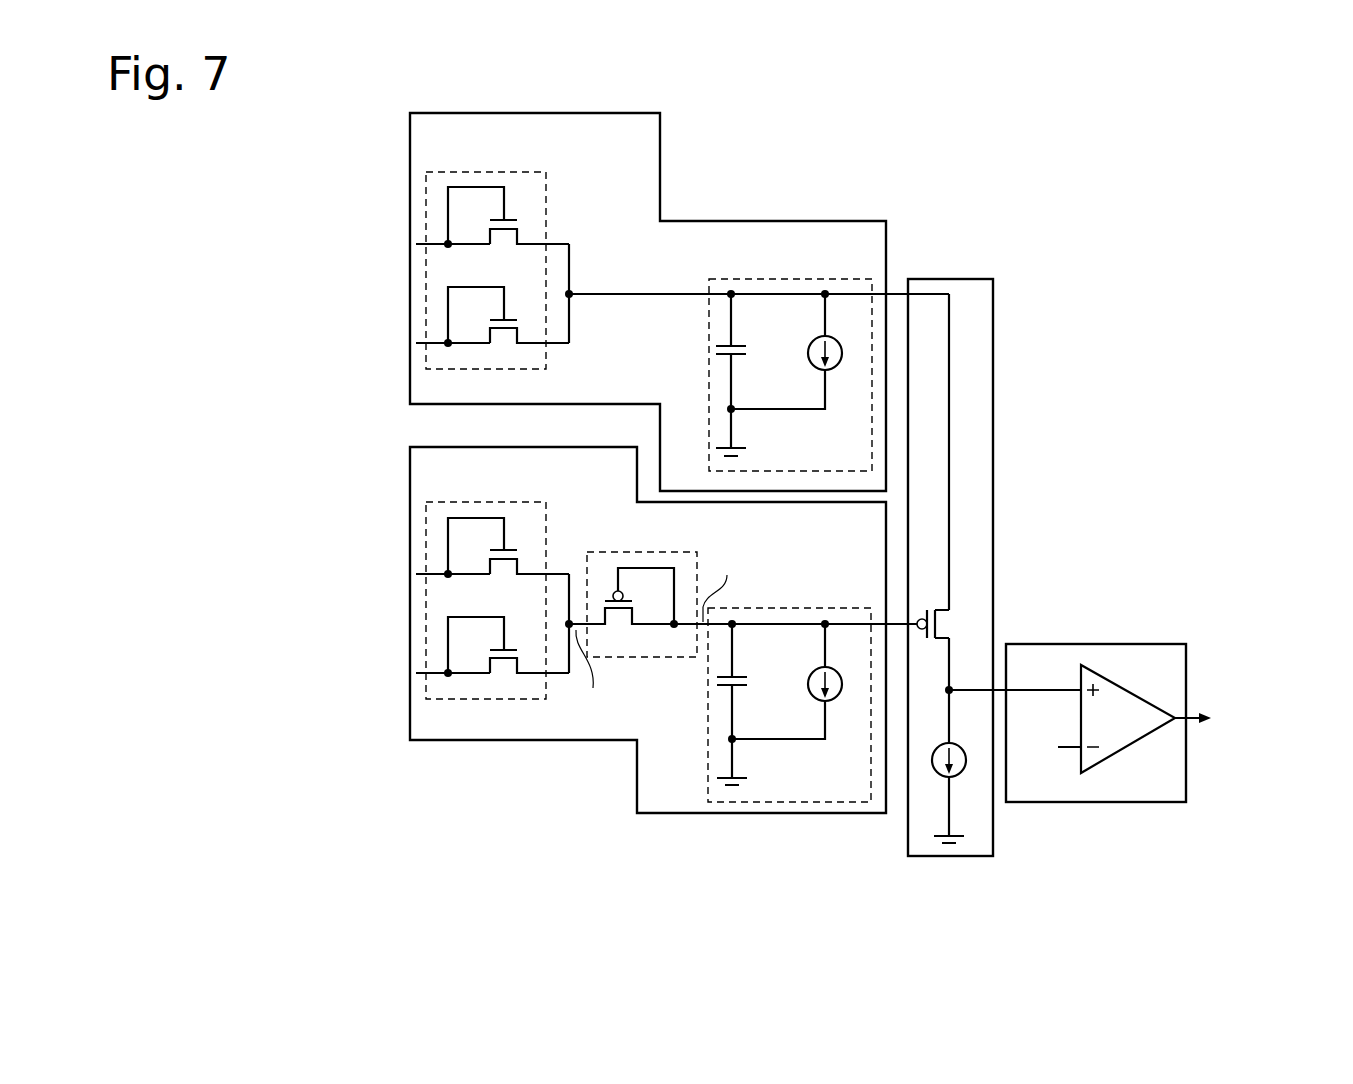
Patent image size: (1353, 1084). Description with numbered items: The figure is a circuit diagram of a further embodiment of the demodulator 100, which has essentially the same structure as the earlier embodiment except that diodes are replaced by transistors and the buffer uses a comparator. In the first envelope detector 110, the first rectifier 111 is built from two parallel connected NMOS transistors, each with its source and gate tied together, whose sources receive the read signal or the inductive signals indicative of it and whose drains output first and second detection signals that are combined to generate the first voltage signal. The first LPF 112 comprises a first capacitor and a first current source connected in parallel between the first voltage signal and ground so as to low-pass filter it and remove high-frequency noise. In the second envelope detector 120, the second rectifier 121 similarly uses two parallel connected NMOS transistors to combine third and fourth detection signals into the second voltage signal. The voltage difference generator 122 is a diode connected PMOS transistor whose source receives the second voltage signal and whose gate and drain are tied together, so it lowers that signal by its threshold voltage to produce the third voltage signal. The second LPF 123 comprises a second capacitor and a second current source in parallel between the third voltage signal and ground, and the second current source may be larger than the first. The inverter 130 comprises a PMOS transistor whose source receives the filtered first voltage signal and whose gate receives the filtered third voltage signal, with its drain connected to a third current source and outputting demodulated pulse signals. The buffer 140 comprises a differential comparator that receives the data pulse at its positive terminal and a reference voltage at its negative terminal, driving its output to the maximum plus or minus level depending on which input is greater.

The demodulator 100 is at (1239, 163).
The first envelope detector 110 is at (784, 221).
The first rectifier 111 is at (493, 172).
The first LPF 112 is at (831, 279).
The second envelope detector 120 is at (683, 814).
The second rectifier 121 is at (493, 502).
The voltage difference generator 122 is at (655, 552).
The second LPF 123 is at (831, 608).
The inverter 130 is at (952, 279).
The buffer 140 is at (1145, 644).